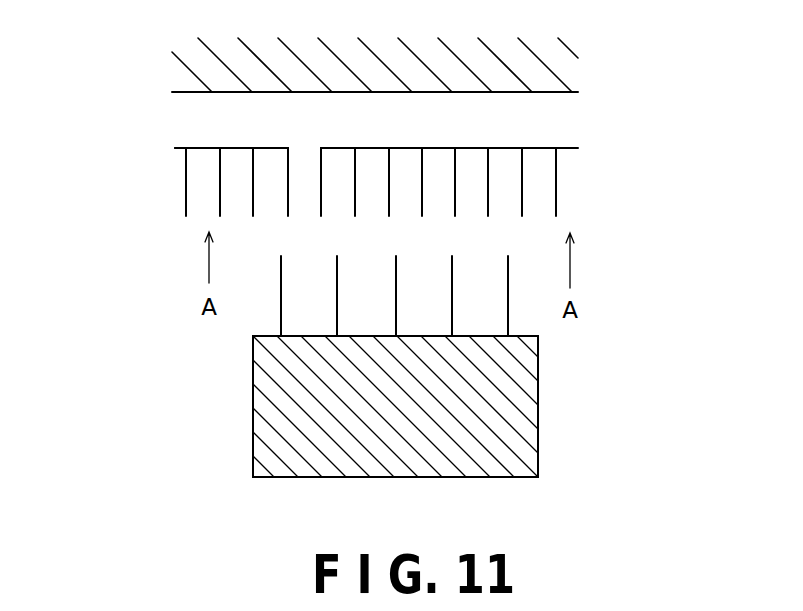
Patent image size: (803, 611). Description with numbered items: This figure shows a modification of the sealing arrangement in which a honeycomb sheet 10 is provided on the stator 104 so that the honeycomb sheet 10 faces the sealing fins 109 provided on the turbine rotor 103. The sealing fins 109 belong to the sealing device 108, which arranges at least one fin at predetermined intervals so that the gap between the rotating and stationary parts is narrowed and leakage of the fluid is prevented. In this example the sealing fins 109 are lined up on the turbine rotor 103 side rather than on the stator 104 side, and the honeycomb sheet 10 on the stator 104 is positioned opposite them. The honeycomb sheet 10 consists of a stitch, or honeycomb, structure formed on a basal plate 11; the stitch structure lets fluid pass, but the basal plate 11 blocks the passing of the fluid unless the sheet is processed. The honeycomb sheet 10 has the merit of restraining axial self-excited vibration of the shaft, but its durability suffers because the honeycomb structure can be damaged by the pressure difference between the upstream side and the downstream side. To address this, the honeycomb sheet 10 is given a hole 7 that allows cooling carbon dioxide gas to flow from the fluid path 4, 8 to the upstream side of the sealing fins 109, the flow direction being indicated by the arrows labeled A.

The stator 104 is at (542, 72).
The fluid path 4 is at (146, 130).
The fluid path 8 is at (192, 125).
The hole 7 is at (306, 162).
The basal plate 11 is at (180, 148).
The honeycomb sheet 10 is at (522, 185).
The sealing device 108 is at (505, 242).
The sealing fins 109 is at (472, 296).
The turbine rotor 103 is at (538, 410).